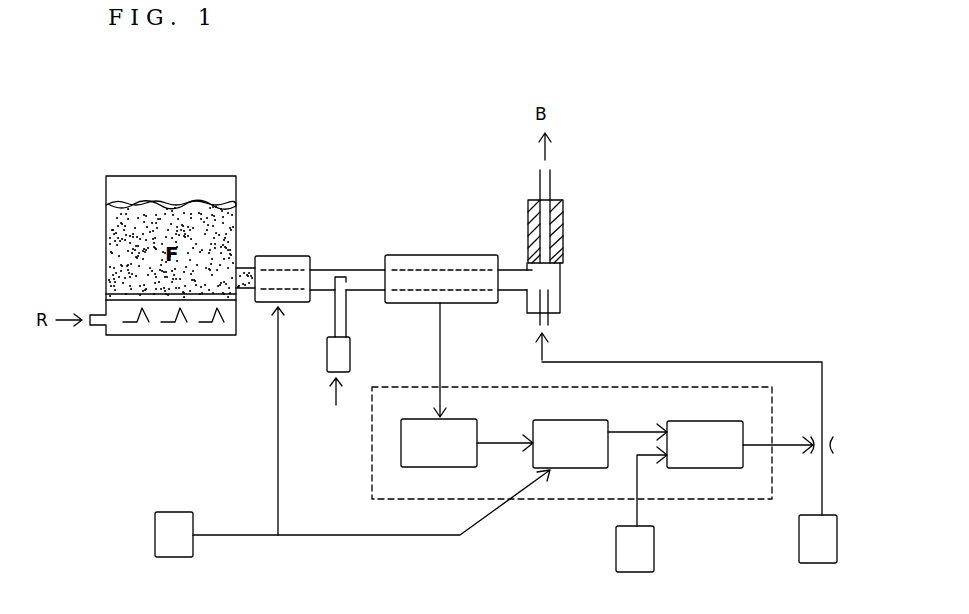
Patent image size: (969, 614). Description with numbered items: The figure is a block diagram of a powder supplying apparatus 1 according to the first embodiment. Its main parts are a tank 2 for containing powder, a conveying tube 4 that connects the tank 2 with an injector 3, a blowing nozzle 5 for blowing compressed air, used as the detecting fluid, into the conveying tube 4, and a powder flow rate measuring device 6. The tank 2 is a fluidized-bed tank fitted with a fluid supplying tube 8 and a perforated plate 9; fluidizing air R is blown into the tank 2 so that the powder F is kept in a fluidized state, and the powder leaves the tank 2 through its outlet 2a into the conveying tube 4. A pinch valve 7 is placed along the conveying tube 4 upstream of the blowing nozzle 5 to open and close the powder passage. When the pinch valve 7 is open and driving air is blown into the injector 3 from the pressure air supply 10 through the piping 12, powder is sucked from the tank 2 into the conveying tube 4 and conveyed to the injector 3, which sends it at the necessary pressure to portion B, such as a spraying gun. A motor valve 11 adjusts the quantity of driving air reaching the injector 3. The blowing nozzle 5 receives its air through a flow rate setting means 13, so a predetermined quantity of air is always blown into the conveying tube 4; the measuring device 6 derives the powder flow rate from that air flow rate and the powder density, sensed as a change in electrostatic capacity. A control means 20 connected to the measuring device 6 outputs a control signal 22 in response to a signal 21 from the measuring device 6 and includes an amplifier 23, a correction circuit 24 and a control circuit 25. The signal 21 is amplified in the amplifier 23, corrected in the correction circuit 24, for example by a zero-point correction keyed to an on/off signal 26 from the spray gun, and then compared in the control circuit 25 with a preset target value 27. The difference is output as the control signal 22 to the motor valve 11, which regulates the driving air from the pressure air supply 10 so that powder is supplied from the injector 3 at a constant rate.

The powder supplying apparatus 1 is at (147, 413).
The tank 2 is at (106, 248).
The fuel outlet 2a is at (238, 224).
The injector 3 is at (550, 282).
The conveying tube 4 is at (363, 265).
The blowing nozzle 5 is at (337, 266).
The powder flow rate measuring device 6 is at (450, 255).
The pinch valve 7 is at (270, 256).
The fluid supplying tube 8 is at (92, 326).
The perforated plate 9 is at (131, 296).
The pressure air supply 10 is at (808, 563).
The motor valve 11 is at (828, 444).
The piping 12 is at (760, 362).
The flow rate setting means 13 is at (350, 357).
The control means 20 is at (572, 468).
The signal 21 is at (440, 407).
The control signal 22 is at (757, 445).
The amplifier 23 is at (457, 467).
The correction circuit 24 is at (558, 468).
The control circuit 25 is at (700, 468).
The on/off signal 26 is at (197, 552).
The preset target value 27 is at (616, 546).